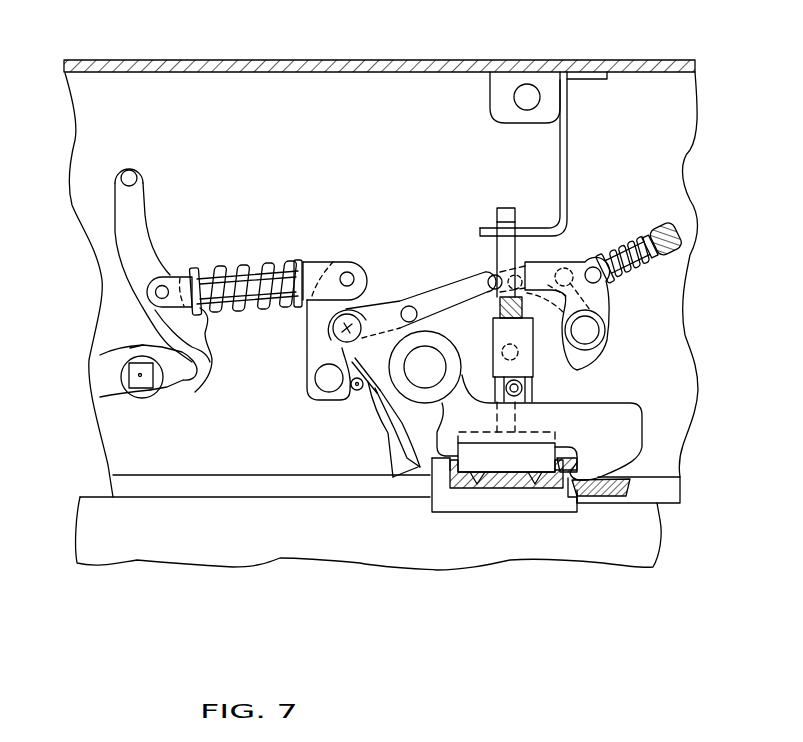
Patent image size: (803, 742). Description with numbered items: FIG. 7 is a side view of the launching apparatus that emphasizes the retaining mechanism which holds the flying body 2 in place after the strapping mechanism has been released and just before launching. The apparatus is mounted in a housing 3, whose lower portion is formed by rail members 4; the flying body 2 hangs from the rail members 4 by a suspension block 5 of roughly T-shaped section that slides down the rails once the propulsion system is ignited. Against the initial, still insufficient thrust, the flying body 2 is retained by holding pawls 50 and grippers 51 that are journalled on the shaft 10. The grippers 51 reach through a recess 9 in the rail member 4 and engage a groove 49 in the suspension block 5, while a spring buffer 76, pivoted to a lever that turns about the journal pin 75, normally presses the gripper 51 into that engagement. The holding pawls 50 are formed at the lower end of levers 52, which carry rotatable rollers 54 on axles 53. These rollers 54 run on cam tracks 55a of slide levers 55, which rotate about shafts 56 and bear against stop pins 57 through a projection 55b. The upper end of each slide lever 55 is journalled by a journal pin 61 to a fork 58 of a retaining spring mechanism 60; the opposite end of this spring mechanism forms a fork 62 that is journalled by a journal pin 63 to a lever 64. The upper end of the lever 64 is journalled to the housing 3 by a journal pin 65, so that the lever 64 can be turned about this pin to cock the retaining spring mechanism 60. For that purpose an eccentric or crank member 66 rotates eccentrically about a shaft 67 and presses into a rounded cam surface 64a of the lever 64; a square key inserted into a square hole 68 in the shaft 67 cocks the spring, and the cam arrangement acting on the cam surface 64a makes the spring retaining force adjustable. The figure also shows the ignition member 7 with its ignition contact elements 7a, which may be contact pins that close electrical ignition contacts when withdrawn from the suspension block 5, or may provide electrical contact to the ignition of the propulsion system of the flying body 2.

The flying body 2 is at (140, 548).
The housing 3 is at (425, 60).
The rail members 4 is at (671, 497).
The suspension block 5 is at (447, 478).
The ignition member 7 is at (543, 447).
The ignition contact elements 7a is at (540, 490).
The recess 9 is at (600, 462).
The shaft 10 is at (431, 358).
The groove 49 is at (575, 490).
The holding pawls 50 is at (423, 458).
The grippers 51 is at (610, 486).
The levers 52 is at (393, 478).
The axles 53 is at (362, 318).
The rollers 54 is at (355, 391).
The slide levers 55 is at (292, 369).
The cam tracks 55a is at (331, 328).
The projection 55b is at (345, 414).
The shafts 56 is at (320, 390).
The stop pins 57 is at (346, 343).
The fork 58 is at (333, 247).
The retaining spring mechanism 60 is at (232, 266).
The journal pin 61 is at (348, 271).
The fork 62 is at (125, 258).
The journal pin 63 is at (155, 292).
The lever 64 is at (126, 261).
The cam surface 64a is at (203, 383).
The journal pin 65 is at (129, 176).
The eccentric member 66 is at (124, 390).
The shaft 67 is at (134, 362).
The square hole 68 is at (134, 377).
The journal pin 75 is at (588, 330).
The spring buffer 76 is at (500, 322).